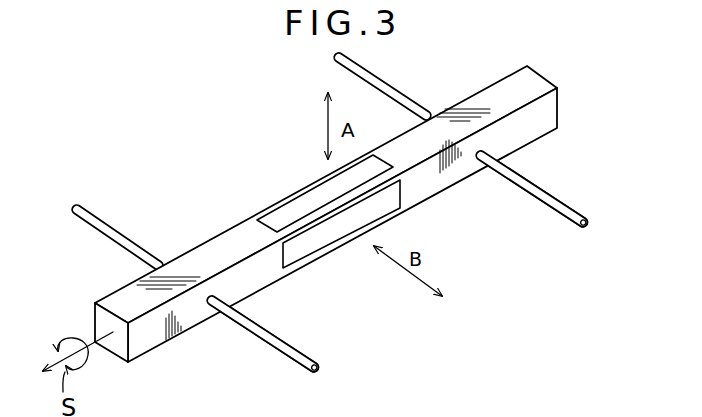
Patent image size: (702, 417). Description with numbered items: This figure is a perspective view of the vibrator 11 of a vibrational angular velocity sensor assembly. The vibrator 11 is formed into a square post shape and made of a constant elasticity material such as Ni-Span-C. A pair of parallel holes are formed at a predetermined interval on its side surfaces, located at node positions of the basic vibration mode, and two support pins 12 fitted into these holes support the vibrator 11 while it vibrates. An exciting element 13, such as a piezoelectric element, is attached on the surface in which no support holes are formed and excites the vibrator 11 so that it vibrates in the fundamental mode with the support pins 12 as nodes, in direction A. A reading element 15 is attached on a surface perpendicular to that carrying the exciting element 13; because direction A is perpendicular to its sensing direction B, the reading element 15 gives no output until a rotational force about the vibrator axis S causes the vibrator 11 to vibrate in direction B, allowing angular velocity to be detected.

The vibrator 11 is at (540, 121).
The support pins 12 is at (560, 203).
The exciting element 13 is at (377, 172).
The reading element 15 is at (342, 228).